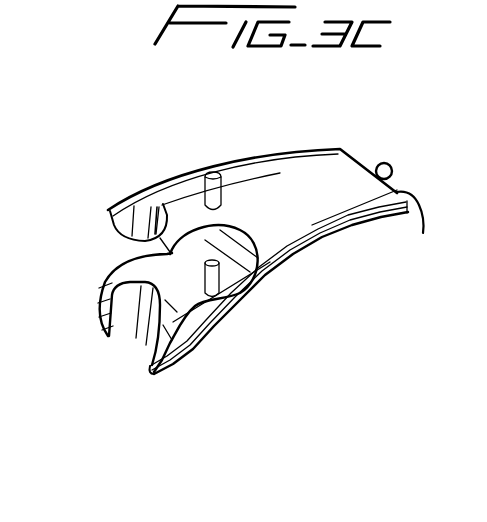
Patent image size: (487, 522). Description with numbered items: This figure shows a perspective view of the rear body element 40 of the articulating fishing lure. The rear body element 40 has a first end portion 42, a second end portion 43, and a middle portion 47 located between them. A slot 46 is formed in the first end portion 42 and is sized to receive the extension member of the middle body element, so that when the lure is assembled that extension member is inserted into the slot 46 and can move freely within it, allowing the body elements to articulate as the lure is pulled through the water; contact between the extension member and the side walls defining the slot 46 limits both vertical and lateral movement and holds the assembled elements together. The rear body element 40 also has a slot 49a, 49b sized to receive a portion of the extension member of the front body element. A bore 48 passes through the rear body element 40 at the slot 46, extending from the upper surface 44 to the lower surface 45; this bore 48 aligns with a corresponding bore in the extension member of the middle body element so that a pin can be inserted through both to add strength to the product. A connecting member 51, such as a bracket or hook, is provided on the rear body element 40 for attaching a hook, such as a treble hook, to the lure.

The rear body element 40 is at (351, 127).
The first end portion 42 is at (158, 342).
The second end portion 43 is at (422, 230).
The upper surface 44 is at (167, 178).
The lower surface 45 is at (205, 345).
The slot 46 is at (154, 266).
The middle portion 47 is at (261, 263).
The bore 48 is at (218, 172).
The slot 49a is at (108, 221).
The slot 49b is at (125, 332).
The connecting member 51 is at (388, 160).